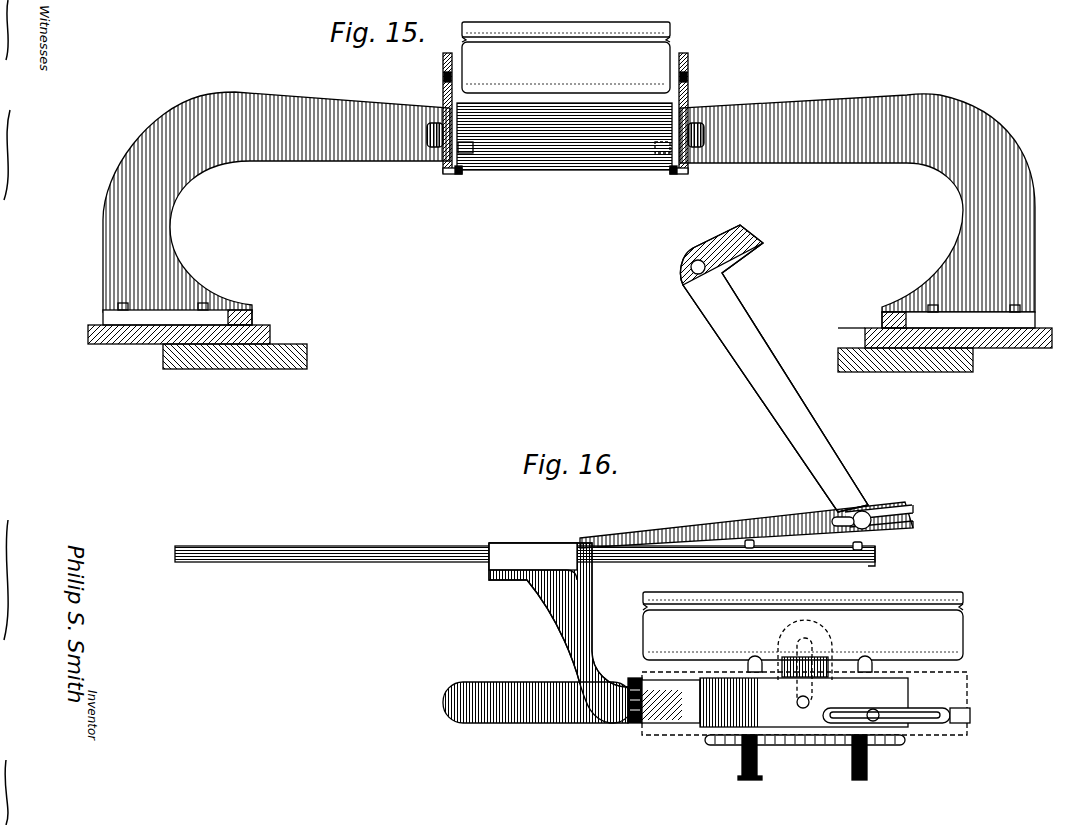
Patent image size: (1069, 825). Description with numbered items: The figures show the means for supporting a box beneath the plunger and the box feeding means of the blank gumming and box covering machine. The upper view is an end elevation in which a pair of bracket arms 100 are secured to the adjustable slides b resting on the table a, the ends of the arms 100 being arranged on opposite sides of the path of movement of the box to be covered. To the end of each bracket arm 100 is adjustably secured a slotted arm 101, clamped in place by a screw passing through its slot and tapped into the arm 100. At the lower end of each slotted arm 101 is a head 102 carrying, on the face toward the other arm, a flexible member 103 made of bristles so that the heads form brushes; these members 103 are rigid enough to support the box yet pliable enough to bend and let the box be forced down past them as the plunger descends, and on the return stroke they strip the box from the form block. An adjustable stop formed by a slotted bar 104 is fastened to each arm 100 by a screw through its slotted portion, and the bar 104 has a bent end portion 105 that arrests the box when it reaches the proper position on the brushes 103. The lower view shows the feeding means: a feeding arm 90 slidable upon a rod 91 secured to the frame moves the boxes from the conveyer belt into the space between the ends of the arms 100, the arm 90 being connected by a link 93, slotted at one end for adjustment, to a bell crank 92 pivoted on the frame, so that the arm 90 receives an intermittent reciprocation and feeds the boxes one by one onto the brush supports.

In FIG. 15, the bracket arm 100 is at (318, 92).
In FIG. 16, the bracket arm 100 is at (765, 764).
In FIG. 15, the slotted arm 101 is at (443, 83).
In FIG. 16, the slotted arm 101 is at (830, 660).
In FIG. 15, the head 102 is at (449, 176).
In FIG. 16, the head 102 is at (710, 745).
In FIG. 15, the flexible member 103 is at (462, 173).
In FIG. 16, the flexible member 103 is at (740, 745).
In FIG. 15, the slotted bar 104 is at (440, 160).
In FIG. 16, the slotted bar 104 is at (935, 711).
In FIG. 15, the bent end portion 105 is at (475, 152).
In FIG. 16, the bent end portion 105 is at (970, 716).
In FIG. 16, the feeding arm 90 is at (588, 648).
In FIG. 16, the rod 91 is at (430, 548).
In FIG. 16, the bell crank 92 is at (785, 351).
In FIG. 16, the link 93 is at (722, 534).
In FIG. 15, the table a is at (568, 205).
In FIG. 16, the table a is at (803, 626).
In FIG. 15, the adjustable slide b is at (270, 336).